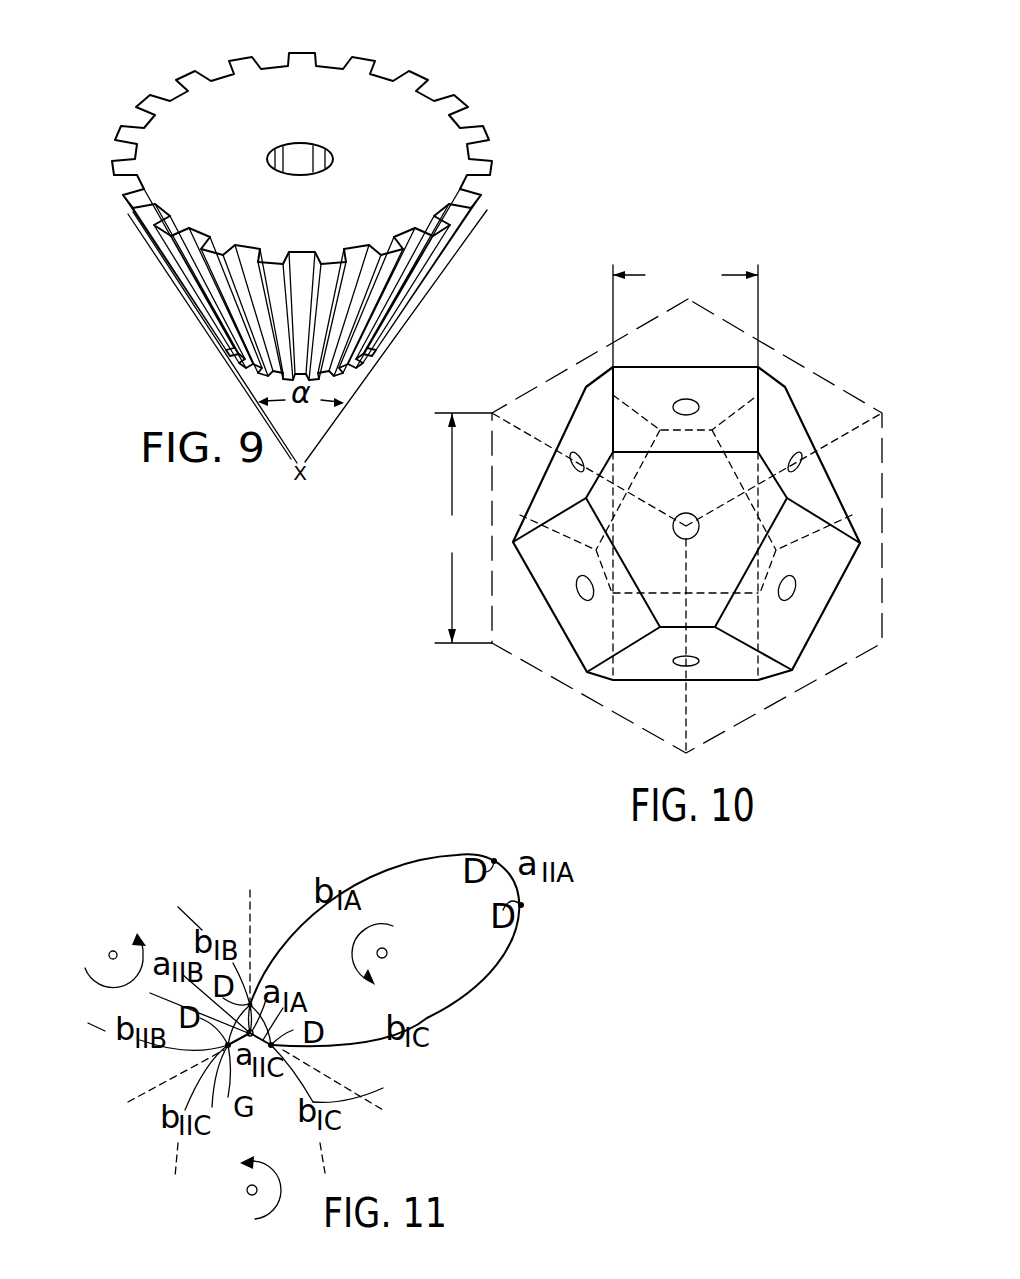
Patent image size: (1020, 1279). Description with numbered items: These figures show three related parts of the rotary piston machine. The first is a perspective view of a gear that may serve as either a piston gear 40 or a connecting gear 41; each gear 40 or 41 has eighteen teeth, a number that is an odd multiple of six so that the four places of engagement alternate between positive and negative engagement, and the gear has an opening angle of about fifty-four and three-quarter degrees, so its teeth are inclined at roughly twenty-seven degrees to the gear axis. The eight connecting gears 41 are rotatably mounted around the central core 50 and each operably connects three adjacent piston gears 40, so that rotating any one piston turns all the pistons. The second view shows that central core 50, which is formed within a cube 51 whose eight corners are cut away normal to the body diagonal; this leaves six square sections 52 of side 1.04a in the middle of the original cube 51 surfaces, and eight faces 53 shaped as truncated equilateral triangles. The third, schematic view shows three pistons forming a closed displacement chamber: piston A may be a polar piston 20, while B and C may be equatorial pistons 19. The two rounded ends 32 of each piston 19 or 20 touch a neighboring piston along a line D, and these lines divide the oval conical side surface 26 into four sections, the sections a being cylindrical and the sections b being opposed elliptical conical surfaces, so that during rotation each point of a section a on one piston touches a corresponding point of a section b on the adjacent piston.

In FIG. 9, the piston gear 40 is at (302, 243).
In FIG. 9, the connecting gear 41 is at (387, 115).
In FIG. 10, the central core 50 is at (691, 509).
In FIG. 10, the cube 51 is at (812, 366).
In FIG. 10, the square section 52 is at (714, 385).
In FIG. 10, the face 53 is at (578, 437).
In FIG. 11, the equatorial piston 19 is at (333, 1028).
In FIG. 11, the polar piston 20 is at (165, 928).
In FIG. 11, the oval conical side surface 26 is at (297, 927).
In FIG. 11, the rounded end 32 is at (330, 1015).